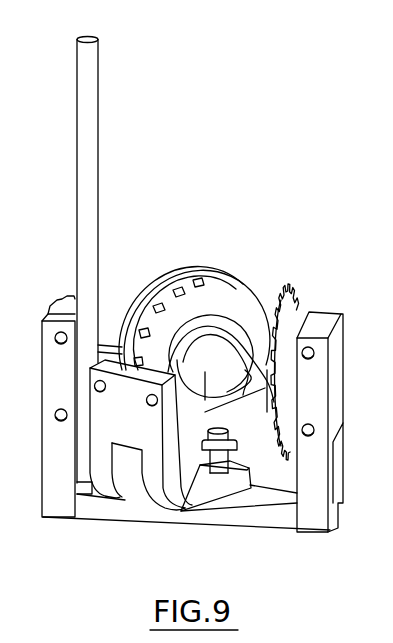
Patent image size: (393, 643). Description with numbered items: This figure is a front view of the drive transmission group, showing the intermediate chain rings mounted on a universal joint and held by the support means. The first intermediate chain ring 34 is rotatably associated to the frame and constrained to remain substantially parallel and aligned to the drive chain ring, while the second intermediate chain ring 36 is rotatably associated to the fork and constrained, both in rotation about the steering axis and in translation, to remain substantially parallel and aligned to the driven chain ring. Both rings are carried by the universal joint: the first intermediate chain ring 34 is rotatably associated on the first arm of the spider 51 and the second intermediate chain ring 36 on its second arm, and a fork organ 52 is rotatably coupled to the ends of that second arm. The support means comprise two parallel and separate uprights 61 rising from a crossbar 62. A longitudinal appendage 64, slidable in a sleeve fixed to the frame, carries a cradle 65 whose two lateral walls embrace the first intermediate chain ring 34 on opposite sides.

The first intermediate chain ring 34 is at (179, 272).
The second intermediate chain ring 36 is at (293, 284).
The spider 51 is at (205, 450).
The fork organ 52 is at (243, 364).
The uprights 61 is at (55, 318).
The crossbar 62 is at (110, 507).
The longitudinal appendage 64 is at (88, 122).
The cradle 65 is at (152, 442).